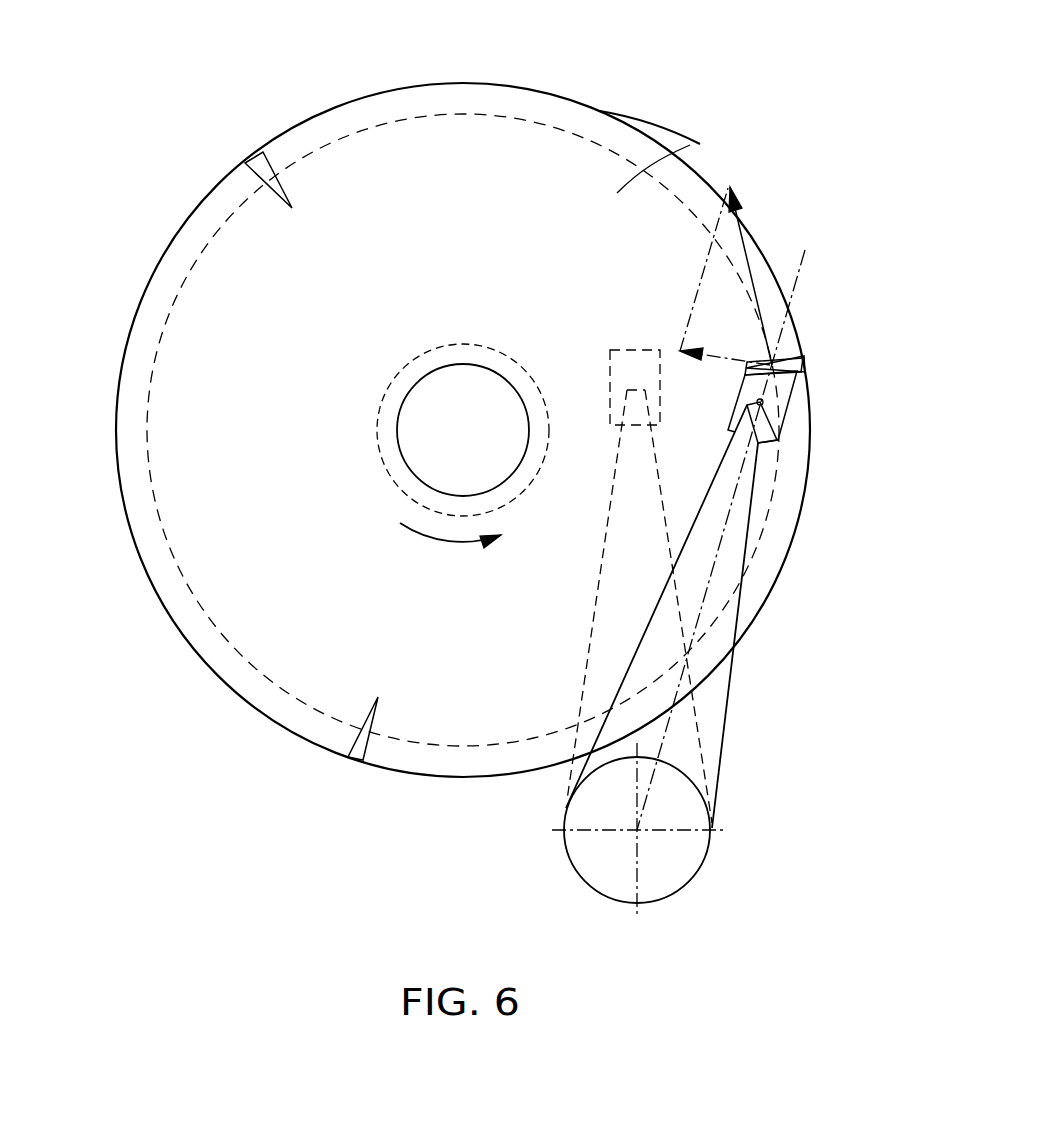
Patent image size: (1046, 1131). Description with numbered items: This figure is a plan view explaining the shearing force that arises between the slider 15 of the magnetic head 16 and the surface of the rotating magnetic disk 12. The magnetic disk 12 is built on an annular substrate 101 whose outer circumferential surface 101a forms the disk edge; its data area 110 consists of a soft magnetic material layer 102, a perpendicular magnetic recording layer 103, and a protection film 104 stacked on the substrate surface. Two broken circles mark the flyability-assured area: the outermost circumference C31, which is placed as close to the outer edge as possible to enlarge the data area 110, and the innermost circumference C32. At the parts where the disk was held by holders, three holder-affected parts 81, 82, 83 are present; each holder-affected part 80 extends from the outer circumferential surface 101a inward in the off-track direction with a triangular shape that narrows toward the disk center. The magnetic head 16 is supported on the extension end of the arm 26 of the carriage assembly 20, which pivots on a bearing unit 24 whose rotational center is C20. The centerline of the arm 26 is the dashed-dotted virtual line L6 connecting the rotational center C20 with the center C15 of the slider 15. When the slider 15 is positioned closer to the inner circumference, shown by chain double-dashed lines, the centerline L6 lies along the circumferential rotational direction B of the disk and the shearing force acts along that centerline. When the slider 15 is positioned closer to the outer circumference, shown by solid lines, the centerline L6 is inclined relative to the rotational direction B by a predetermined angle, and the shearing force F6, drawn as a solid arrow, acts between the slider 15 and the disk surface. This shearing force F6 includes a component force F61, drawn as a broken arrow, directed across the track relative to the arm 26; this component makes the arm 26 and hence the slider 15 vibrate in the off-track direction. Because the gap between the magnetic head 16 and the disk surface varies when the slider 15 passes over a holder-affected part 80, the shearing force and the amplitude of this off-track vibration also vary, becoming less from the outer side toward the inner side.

The magnetic disk 12 is at (571, 81).
The annular substrate 101 is at (592, 103).
The outer circumferential surface 101a is at (646, 122).
The data area 110 is at (751, 153).
The soft magnetic material layer 102 is at (751, 153).
The perpendicular magnetic recording layer 103 is at (751, 153).
The protection film 104 is at (690, 145).
The flyability-assured area outermost circumference C31 is at (428, 115).
The flyability-assured area innermost circumference C32 is at (460, 347).
The holder-affected part 80 is at (559, 456).
The holder-affected part 81 is at (790, 362).
The holder-affected part 82 is at (367, 718).
The holder-affected part 83 is at (268, 198).
The rotational direction B is at (450, 548).
The shearing force F6 is at (737, 212).
The component force F61 is at (723, 357).
The centerline of the arm L6 is at (705, 652).
The slider 15 is at (798, 368).
The center of the slider C15 is at (762, 402).
The magnetic head 16 is at (796, 424).
The carriage assembly 20 is at (735, 700).
The arm 26 is at (727, 615).
The bearing unit 24 is at (678, 875).
The rotational center of the bearing unit C20 is at (633, 832).